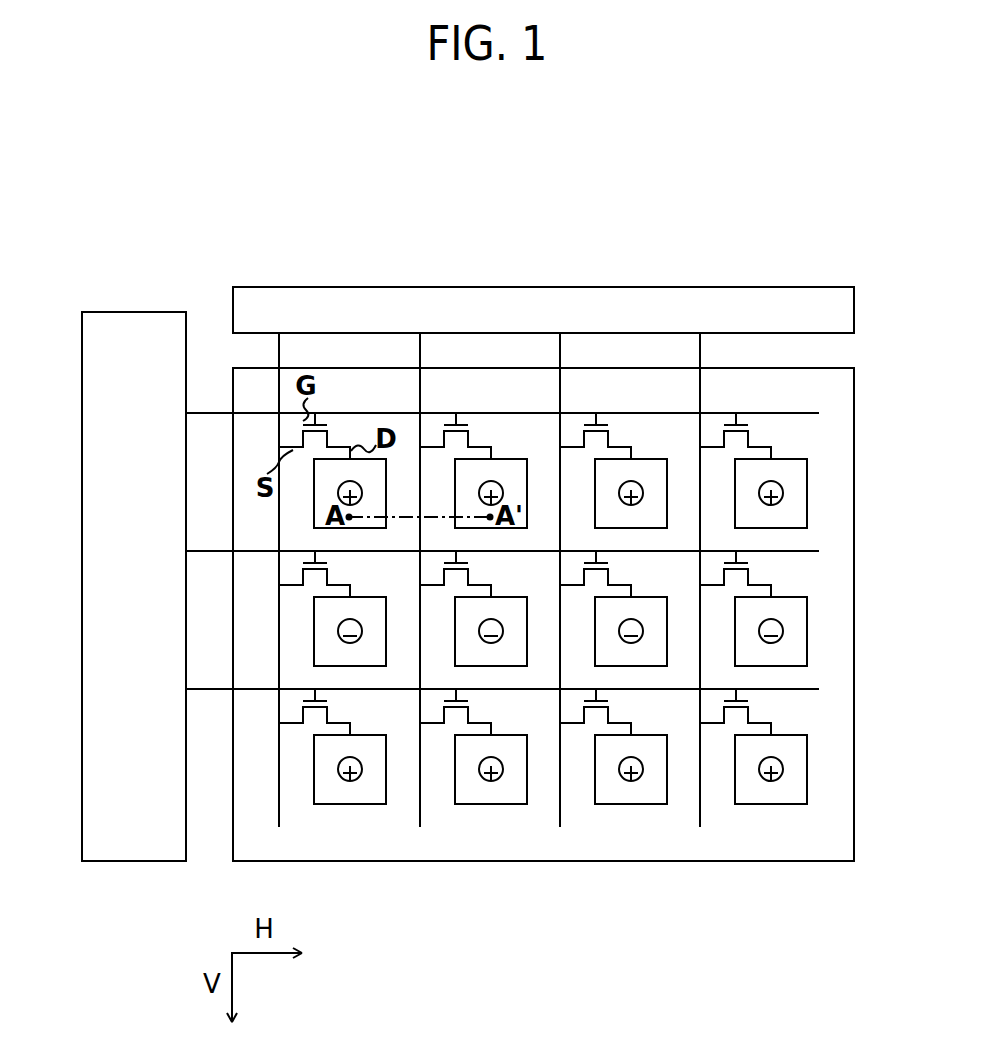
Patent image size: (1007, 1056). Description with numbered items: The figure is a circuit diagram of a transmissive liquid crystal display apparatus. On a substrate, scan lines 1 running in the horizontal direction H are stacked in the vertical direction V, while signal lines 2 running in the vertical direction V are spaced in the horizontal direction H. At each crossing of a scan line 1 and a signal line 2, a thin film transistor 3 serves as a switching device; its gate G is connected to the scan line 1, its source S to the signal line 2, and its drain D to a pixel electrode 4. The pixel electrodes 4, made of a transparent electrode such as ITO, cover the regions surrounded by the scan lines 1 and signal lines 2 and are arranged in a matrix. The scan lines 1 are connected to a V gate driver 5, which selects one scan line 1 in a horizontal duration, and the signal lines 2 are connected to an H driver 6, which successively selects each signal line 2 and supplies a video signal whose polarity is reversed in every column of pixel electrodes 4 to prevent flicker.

The scan line 1 is at (213, 586).
The signal line 2 is at (456, 350).
The thin film transistor 3 is at (350, 433).
The pixel electrode 4 is at (879, 765).
The V gate driver 5 is at (82, 511).
The H driver 6 is at (537, 286).